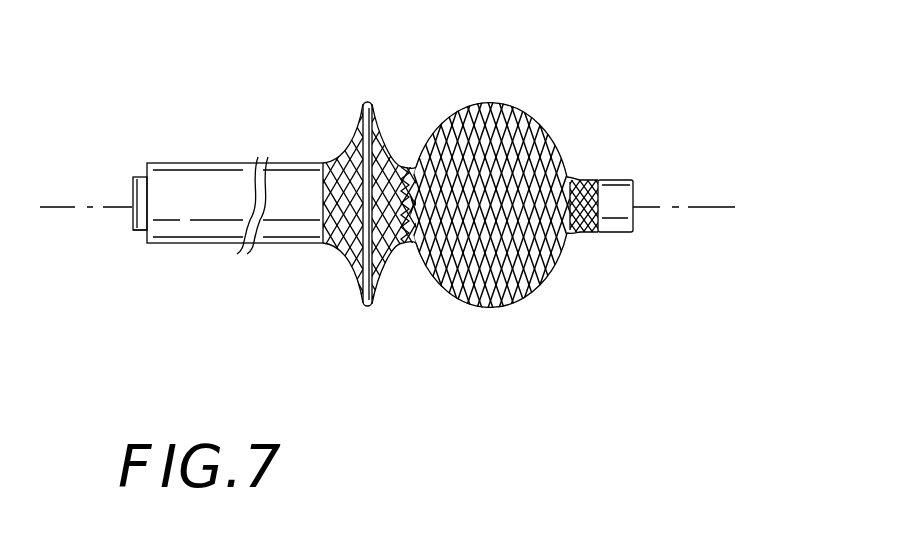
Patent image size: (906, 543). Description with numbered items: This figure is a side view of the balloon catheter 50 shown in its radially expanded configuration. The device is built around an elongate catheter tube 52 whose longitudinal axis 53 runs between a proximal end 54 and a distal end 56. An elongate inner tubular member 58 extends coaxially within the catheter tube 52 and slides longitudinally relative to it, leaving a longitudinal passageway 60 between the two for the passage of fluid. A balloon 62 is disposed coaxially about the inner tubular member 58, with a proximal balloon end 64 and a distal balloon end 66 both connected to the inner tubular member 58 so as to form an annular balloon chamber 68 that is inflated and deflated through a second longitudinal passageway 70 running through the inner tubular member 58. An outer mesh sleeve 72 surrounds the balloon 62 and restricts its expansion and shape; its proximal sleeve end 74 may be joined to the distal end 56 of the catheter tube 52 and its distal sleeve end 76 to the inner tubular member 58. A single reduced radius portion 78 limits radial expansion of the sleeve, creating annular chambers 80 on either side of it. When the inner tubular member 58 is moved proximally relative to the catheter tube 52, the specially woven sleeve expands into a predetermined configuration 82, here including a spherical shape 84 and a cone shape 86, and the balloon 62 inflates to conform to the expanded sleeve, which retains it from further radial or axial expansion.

The balloon catheter 50 is at (413, 99).
The catheter tube 52 is at (179, 245).
The longitudinal axis 53 is at (710, 207).
The proximal end 54 is at (147, 172).
The distal end 56 is at (590, 237).
The inner tubular member 58 is at (131, 222).
The longitudinal passageway 60 is at (145, 173).
The balloon 62 is at (456, 305).
The proximal balloon end 64 is at (335, 250).
The distal balloon end 66 is at (577, 178).
The annular balloon chamber 68 is at (527, 300).
The second longitudinal passageway 70 is at (132, 191).
The outer mesh sleeve 72 is at (516, 105).
The proximal sleeve end 74 is at (325, 163).
The distal sleeve end 76 is at (599, 233).
The reduced radius portion 78 is at (405, 250).
The annular chamber 80 is at (362, 302).
The predetermined configuration 82 is at (364, 101).
The spherical shape 84 is at (489, 308).
The cone shape 86 is at (368, 103).